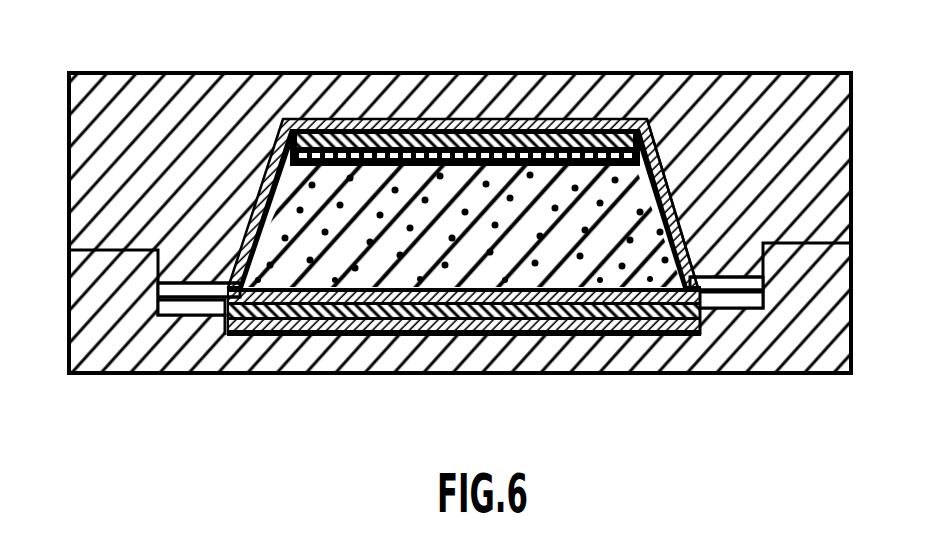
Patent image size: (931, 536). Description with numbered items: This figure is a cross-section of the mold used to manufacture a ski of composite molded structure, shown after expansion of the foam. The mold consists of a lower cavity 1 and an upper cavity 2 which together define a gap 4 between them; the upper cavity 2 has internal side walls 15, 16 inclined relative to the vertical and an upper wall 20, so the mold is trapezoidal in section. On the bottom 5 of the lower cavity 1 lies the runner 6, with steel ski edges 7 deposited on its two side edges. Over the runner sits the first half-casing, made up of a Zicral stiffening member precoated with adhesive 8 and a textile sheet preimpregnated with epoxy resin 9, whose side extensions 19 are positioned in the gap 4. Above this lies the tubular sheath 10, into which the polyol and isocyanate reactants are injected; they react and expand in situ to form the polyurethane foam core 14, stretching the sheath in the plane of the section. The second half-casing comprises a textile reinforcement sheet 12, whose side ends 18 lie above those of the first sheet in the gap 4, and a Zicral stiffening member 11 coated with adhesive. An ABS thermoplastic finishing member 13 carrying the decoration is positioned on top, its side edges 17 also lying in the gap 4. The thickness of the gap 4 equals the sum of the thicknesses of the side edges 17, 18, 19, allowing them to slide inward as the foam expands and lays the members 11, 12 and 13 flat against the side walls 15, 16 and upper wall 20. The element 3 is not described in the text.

The lower cavity 1 is at (125, 343).
The upper cavity 2 is at (140, 130).
The mold cavity step 3 is at (75, 250).
The gap 4 is at (200, 290).
The bottom 5 is at (505, 333).
The runner 6 is at (422, 318).
The ski edges 7 is at (243, 337).
The stiffening member precoated with adhesive 8 is at (338, 302).
The textile sheet preimpregnated with epoxy resin 9 is at (562, 291).
The flattened tubular sheath 10 is at (552, 118).
The Zicral stiffening member 11 is at (475, 118).
The textile reinforcement sheet 12 is at (358, 126).
The thermoplastic finishing member 13 is at (516, 118).
The polyurethane foam core 14 is at (588, 197).
The internal side wall 15 is at (262, 178).
The internal side wall 16 is at (690, 158).
The side edges 17 is at (205, 283).
The side ends 18 is at (218, 296).
The side extensions 19 is at (190, 314).
The upper wall 20 is at (436, 118).